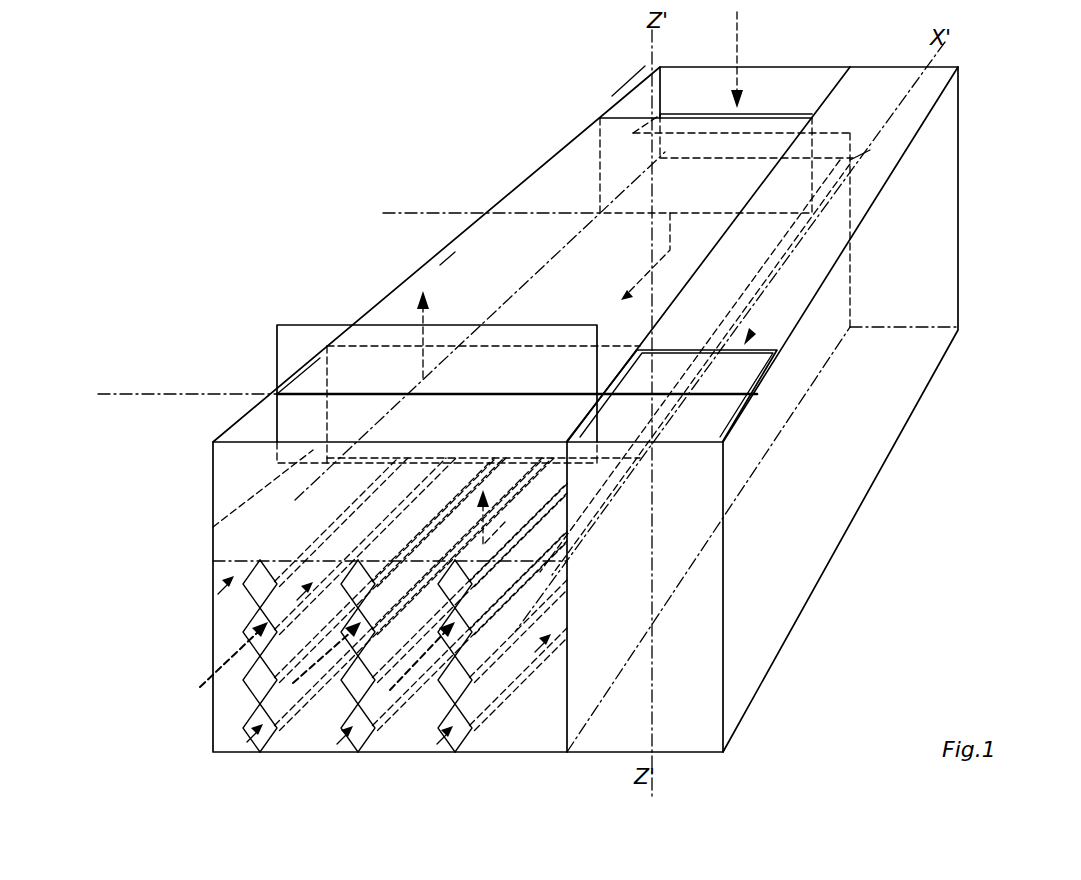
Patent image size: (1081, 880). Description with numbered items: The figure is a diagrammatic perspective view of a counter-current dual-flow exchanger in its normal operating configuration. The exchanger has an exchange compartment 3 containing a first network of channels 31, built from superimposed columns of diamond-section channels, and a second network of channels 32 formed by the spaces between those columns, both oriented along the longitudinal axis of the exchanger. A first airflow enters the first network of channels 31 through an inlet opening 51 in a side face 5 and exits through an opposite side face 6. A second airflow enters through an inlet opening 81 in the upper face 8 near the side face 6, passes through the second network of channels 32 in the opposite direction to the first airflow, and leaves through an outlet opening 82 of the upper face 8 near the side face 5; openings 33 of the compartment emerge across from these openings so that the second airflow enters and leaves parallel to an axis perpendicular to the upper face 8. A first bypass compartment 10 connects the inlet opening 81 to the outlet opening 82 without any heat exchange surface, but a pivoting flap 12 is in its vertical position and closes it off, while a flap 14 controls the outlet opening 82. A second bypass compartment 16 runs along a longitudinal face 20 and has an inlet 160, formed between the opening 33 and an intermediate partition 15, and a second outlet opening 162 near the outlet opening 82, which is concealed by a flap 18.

The exchange compartment 3 is at (562, 790).
The side face 5 is at (232, 738).
The opposite side face 6 is at (905, 245).
The upper face 8 is at (688, 66).
The first bypass compartment 10 is at (450, 277).
The flap 12 is at (592, 160).
The flap 14 is at (318, 325).
The intermediate partition 15 is at (840, 116).
The second bypass compartment 16 is at (720, 790).
The flap 18 is at (732, 375).
The longitudinal face 20 is at (935, 262).
The first network of channels 31 is at (440, 748).
The second network of channels 32 is at (666, 170).
The openings 33 is at (200, 532).
The inlet opening 51 is at (137, 567).
The inlet opening 81 is at (632, 75).
The outlet opening 82 is at (320, 333).
The inlet 160 is at (850, 160).
The second outlet opening 162 is at (755, 335).